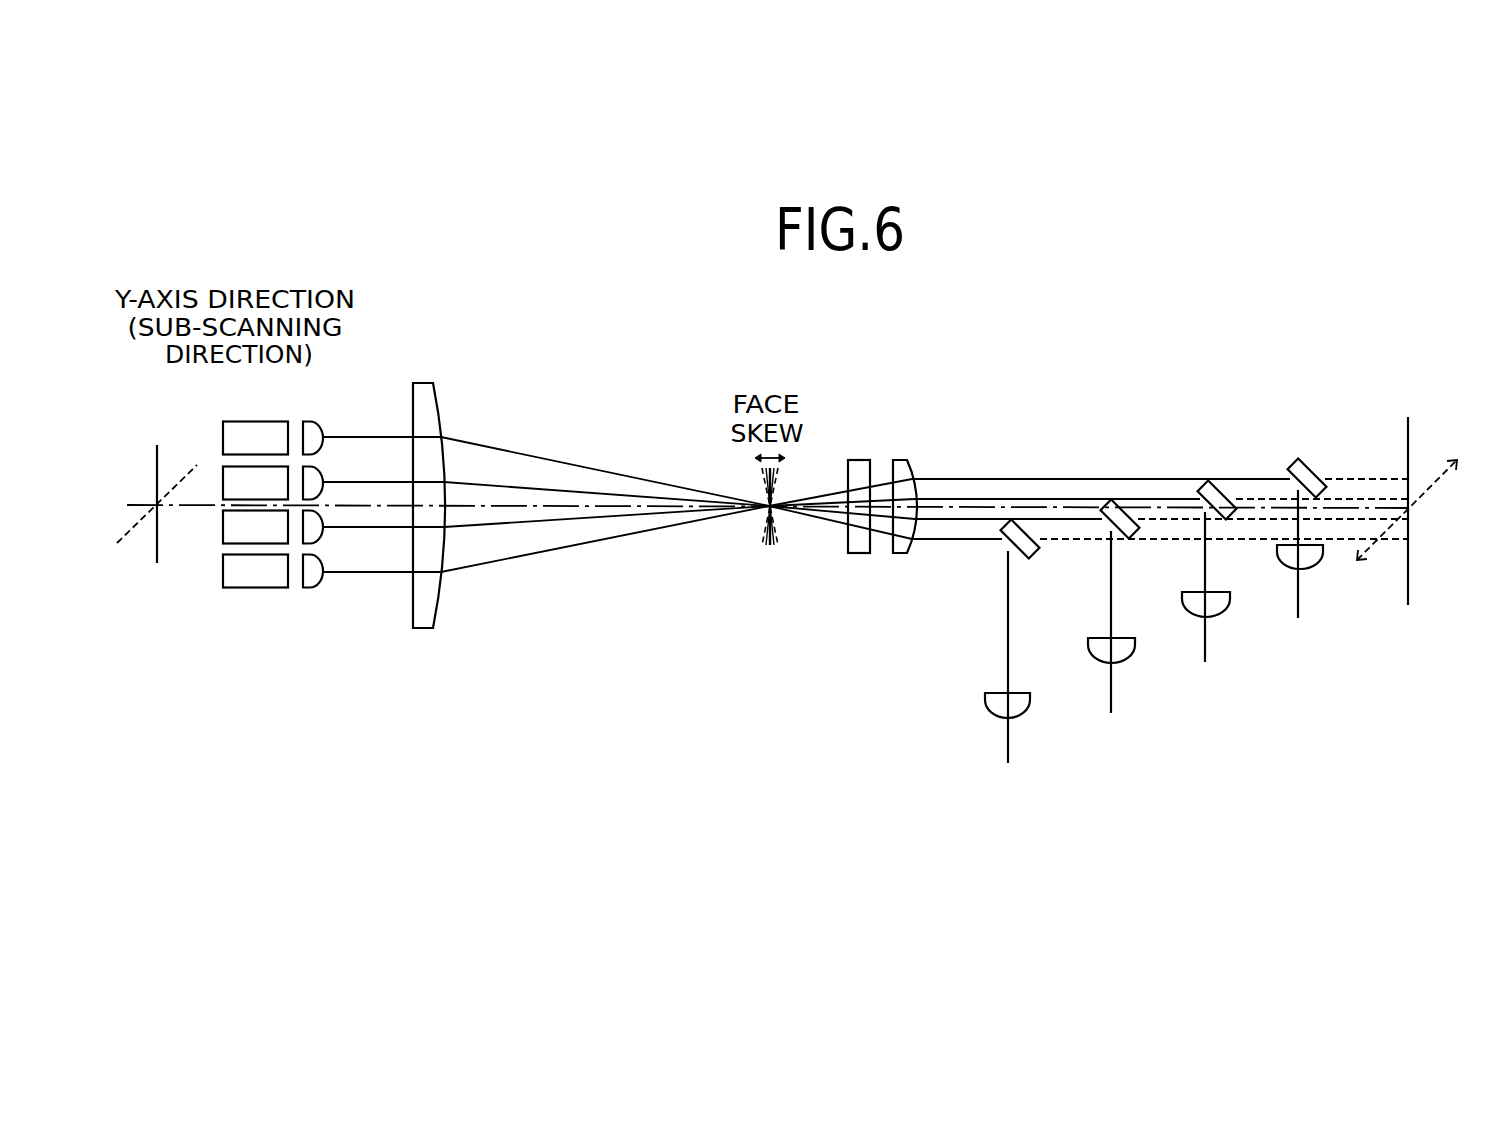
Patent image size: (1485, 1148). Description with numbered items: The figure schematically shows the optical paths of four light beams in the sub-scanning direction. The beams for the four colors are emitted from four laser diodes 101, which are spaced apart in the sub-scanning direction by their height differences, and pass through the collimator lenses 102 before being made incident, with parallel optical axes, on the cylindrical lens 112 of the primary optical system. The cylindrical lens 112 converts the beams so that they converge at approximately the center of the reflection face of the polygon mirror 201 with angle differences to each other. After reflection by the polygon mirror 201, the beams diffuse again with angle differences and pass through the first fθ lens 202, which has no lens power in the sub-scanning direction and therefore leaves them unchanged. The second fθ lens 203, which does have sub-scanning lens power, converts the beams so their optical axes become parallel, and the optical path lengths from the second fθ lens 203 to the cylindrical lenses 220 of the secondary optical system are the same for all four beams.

The laser diodes 101 is at (253, 590).
The collimator lenses 102 is at (307, 590).
The cylindrical lens 112 is at (433, 408).
The polygon mirror 201 is at (778, 537).
The first fθ lens 202 is at (858, 460).
The second fθ lens 203 is at (905, 462).
The cylindrical lenses 220 is at (985, 700).